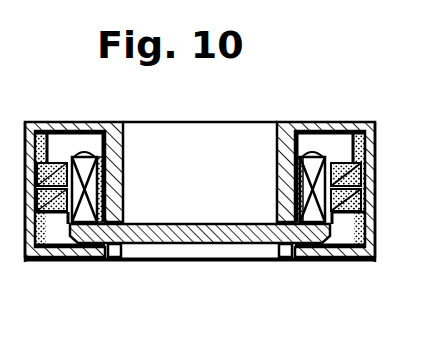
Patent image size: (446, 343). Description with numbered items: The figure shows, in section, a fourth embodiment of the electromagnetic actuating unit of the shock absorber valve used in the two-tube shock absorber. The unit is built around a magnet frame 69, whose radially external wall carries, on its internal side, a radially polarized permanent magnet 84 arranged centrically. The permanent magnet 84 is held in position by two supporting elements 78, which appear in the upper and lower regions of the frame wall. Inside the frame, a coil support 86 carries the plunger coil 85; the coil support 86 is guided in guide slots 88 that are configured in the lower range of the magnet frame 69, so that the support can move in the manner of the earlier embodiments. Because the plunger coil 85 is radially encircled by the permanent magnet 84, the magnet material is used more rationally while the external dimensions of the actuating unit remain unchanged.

The magnet frame 69 is at (286, 140).
The supporting elements 78 is at (358, 124).
The permanent magnet 84 is at (60, 145).
The plunger coil 85 is at (310, 158).
The coil support 86 is at (211, 246).
The guide slots 88 is at (113, 262).